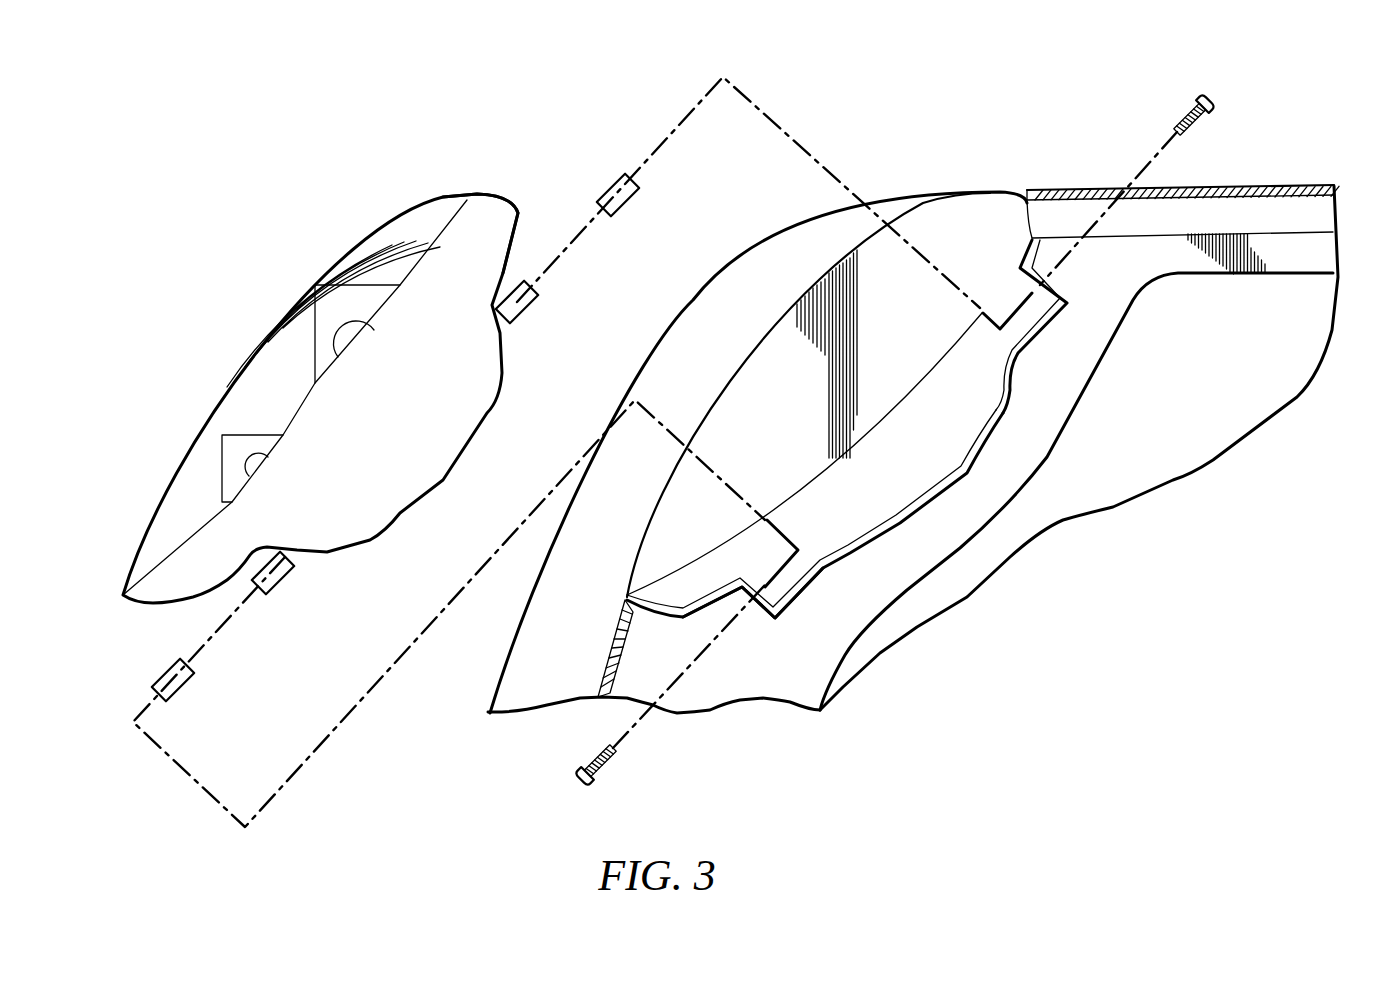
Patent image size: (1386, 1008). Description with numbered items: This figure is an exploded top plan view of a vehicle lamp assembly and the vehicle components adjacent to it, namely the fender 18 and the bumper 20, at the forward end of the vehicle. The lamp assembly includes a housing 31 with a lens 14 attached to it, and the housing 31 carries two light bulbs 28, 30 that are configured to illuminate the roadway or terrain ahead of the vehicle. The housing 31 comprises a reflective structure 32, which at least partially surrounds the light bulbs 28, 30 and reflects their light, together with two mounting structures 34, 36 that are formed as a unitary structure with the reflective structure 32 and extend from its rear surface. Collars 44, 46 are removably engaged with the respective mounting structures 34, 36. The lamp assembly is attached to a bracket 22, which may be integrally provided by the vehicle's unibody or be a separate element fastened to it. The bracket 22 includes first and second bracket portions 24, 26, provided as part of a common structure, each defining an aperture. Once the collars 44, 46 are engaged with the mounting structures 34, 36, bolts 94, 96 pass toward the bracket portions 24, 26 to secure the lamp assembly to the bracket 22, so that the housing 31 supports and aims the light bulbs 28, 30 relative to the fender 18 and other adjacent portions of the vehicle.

The lens 14 is at (378, 238).
The fender 18 is at (1255, 185).
The bumper 20 is at (763, 263).
The bracket 22 is at (1020, 421).
The first bracket portion 24 is at (1057, 288).
The second bracket portion 26 is at (775, 605).
The light bulb 28 is at (340, 362).
The light bulb 30 is at (267, 457).
The housing 31 is at (540, 192).
The reflective structure 32 is at (477, 240).
The mounting structure 34 is at (513, 308).
The mounting structure 36 is at (278, 573).
The collar 44 is at (630, 210).
The collar 46 is at (185, 692).
The bolt 94 is at (1183, 113).
The bolt 96 is at (610, 770).